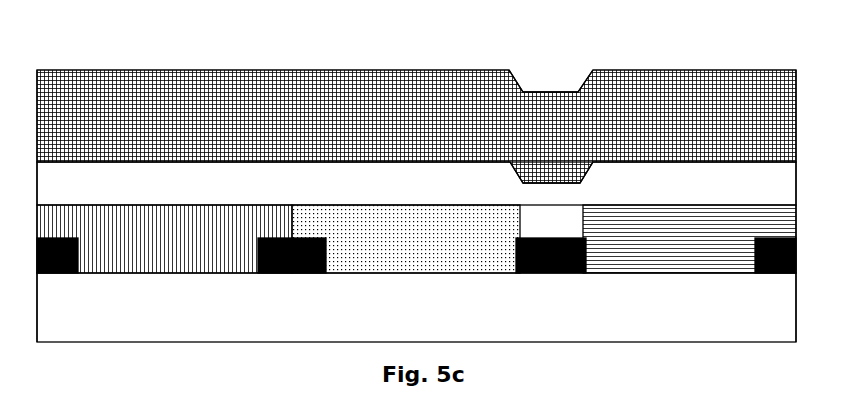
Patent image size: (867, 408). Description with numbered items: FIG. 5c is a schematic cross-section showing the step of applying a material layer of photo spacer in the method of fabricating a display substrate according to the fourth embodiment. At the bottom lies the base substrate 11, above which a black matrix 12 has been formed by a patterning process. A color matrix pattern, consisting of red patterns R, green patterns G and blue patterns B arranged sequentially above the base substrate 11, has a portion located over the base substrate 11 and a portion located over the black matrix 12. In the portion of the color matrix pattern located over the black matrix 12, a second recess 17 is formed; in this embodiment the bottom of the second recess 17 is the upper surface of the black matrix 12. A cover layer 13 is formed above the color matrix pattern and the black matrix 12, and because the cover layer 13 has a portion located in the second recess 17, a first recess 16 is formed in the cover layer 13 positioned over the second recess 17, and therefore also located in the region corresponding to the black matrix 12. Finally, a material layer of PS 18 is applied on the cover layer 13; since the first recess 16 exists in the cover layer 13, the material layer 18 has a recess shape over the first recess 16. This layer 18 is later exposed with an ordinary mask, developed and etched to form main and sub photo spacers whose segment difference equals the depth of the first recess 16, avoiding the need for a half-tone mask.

The base substrate 11 is at (137, 317).
The black matrix 12 is at (282, 238).
The cover layer 13 is at (155, 186).
The first recess 16 is at (552, 177).
The second recess 17 is at (547, 229).
The material layer of photo spacer 18 is at (461, 134).
The red patterns R is at (223, 228).
The green patterns G is at (405, 220).
The blue patterns B is at (699, 220).